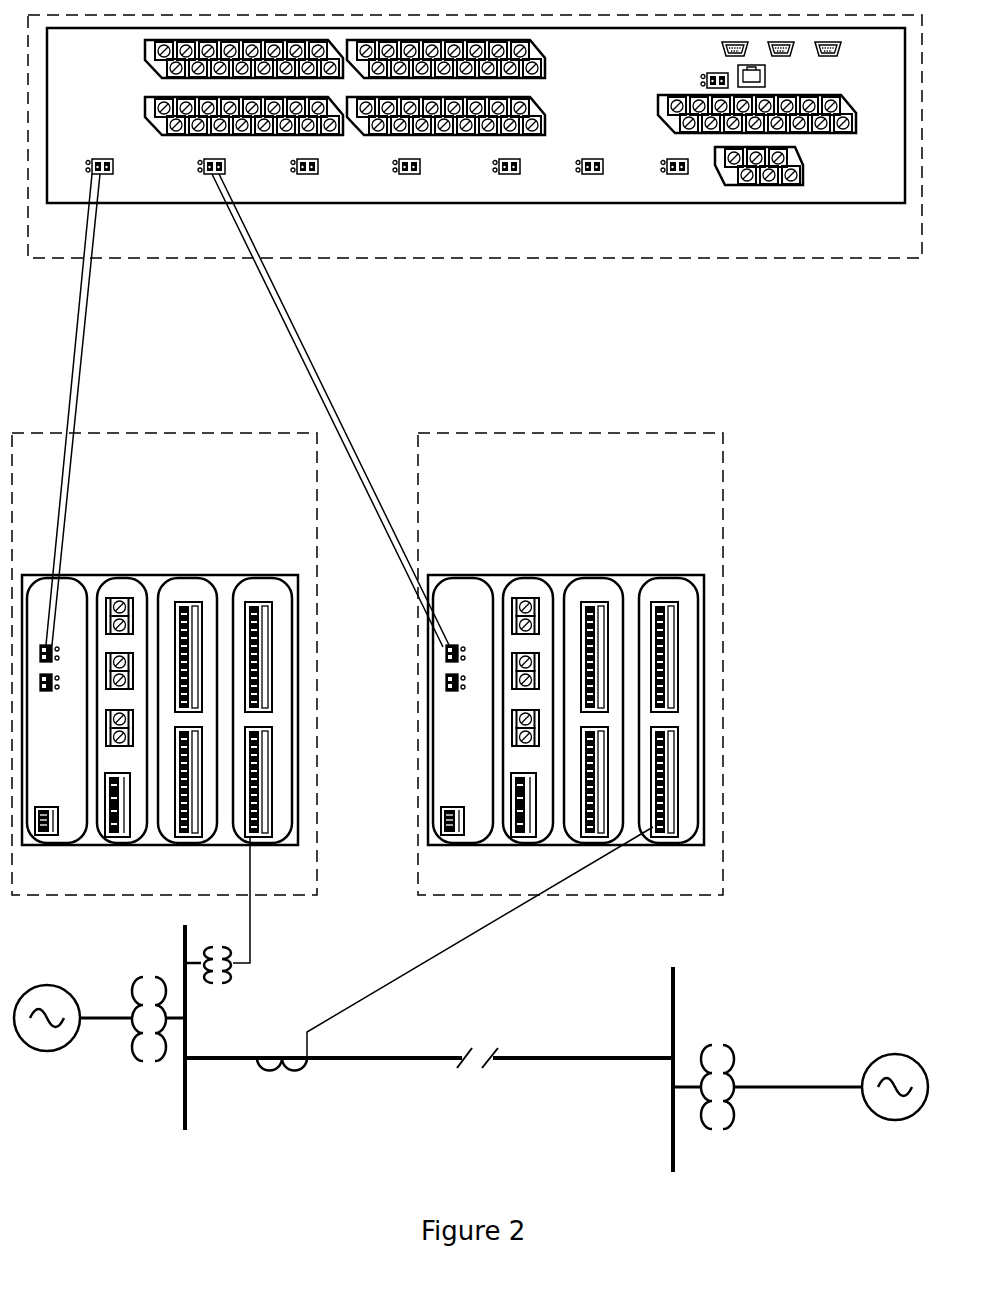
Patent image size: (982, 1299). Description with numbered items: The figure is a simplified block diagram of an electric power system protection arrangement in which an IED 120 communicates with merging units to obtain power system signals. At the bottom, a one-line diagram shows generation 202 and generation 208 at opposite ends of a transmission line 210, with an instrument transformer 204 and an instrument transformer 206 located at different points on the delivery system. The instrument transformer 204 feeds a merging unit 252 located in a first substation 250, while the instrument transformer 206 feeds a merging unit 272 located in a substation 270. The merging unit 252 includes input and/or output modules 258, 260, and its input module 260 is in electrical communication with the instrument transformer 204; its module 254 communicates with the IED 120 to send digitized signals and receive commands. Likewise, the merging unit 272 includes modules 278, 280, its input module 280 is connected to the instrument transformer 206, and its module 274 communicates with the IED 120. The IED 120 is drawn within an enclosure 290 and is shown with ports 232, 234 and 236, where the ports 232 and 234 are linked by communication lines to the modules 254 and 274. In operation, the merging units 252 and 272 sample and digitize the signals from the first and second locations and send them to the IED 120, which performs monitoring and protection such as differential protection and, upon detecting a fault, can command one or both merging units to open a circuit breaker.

The IED 120 is at (555, 205).
The central controller enclosure 290 is at (790, 260).
The communication port 232 is at (93, 157).
The communication port 234 is at (196, 168).
The communication port 236 is at (662, 157).
The first substation 250 is at (160, 433).
The input and/or output module 258 is at (166, 715).
The module 254 is at (68, 833).
The merging unit 252 is at (227, 848).
The input module 260 is at (272, 842).
The substation 270 is at (570, 644).
The input and/or output module 278 is at (571, 715).
The module 274 is at (477, 760).
The merging unit 272 is at (606, 744).
The input module 280 is at (682, 744).
The generation 202 is at (40, 1053).
The instrument transformer 204 is at (210, 983).
The instrument transformer 206 is at (268, 1070).
The transmission line 210 is at (408, 1062).
The generation 208 is at (897, 1122).